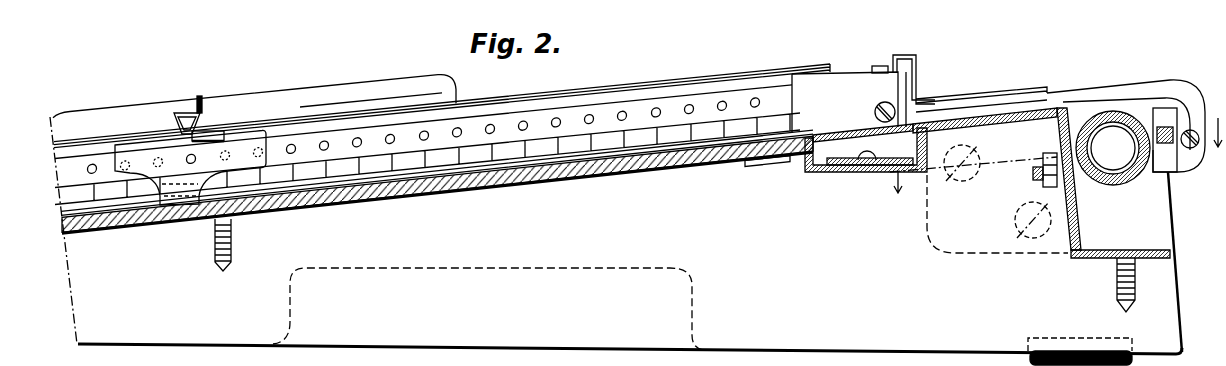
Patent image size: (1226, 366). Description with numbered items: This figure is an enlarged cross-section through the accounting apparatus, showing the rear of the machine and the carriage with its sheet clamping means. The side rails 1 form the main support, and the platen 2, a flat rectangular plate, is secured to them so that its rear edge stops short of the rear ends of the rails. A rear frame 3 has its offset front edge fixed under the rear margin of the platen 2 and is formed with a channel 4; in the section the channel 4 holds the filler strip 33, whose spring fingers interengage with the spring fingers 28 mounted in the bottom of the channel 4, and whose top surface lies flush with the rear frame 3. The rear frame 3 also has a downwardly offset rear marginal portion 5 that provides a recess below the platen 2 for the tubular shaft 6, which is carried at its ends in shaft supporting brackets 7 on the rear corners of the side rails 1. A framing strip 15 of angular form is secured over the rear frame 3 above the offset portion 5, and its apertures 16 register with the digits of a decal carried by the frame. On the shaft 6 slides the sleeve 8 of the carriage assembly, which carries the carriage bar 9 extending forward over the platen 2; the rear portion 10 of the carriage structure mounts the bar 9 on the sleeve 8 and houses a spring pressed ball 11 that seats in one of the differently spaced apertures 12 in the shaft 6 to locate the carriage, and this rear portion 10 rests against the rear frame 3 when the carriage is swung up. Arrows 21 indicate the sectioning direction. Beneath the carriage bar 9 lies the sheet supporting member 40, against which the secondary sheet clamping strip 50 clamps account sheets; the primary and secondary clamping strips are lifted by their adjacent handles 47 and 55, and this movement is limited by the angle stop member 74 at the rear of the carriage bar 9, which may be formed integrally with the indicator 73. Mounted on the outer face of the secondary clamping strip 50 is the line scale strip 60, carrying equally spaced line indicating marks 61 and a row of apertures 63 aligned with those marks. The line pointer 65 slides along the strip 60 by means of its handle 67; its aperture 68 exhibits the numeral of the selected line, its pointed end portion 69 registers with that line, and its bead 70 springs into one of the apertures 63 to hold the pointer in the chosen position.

The side rails 1 is at (127, 335).
The platen 2 is at (602, 176).
The rear frame 3 is at (765, 166).
The channel 4 is at (825, 175).
The downwardly offset rear marginal portion 5 is at (1093, 255).
The tubular shaft 6 is at (1094, 112).
The shaft supporting brackets 7 is at (1162, 219).
The sleeve 8 is at (1146, 96).
The carriage bar 9 is at (1012, 105).
The rear portion of the carriage bar structure 10 is at (1177, 173).
The spring pressed ball 11 is at (1158, 171).
The apertures 12 is at (1092, 150).
The framing strip 15 is at (1042, 110).
The apertures 16 is at (984, 122).
The direction arrow 21 is at (1060, 158).
The spring fingers 28 is at (852, 169).
The filler strip 33 is at (832, 140).
The sheet supporting member 40 is at (677, 161).
The handle 47 is at (318, 93).
The secondary sheet clamping strip 50 is at (908, 84).
The handle 55 is at (143, 106).
The line scale strip 60 is at (720, 88).
The line indicating marks 61 is at (426, 164).
The apertures 63 is at (560, 118).
The line pointer 65 is at (246, 141).
The handle 67 is at (187, 108).
The aperture 68 is at (211, 136).
The pointed end portion 69 is at (177, 210).
The bead 70 is at (188, 154).
The indicator 73 is at (968, 96).
The angle stop member 74 is at (917, 58).